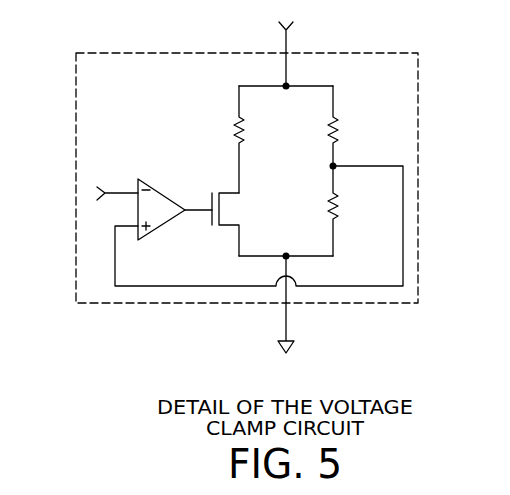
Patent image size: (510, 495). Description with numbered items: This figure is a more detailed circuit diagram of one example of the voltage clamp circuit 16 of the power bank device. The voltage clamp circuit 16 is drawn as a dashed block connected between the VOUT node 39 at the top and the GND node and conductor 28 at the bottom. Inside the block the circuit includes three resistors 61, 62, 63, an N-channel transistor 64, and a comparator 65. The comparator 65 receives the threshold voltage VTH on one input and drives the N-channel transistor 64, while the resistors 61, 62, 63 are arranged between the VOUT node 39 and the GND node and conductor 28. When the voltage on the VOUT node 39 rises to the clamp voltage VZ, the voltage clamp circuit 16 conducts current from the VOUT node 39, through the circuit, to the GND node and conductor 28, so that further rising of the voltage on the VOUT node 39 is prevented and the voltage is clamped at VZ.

The voltage clamp circuit 16 is at (178, 53).
The VOUT node 39 is at (288, 41).
The resistor 61 is at (245, 131).
The resistor 62 is at (339, 131).
The resistor 63 is at (339, 207).
The N-channel transistor 64 is at (233, 212).
The comparator 65 is at (165, 214).
The GND node and conductor 28 is at (288, 324).